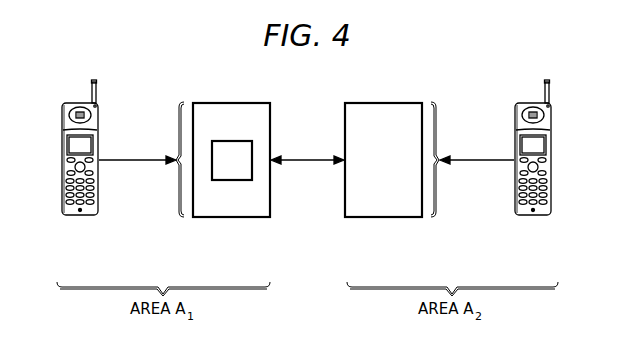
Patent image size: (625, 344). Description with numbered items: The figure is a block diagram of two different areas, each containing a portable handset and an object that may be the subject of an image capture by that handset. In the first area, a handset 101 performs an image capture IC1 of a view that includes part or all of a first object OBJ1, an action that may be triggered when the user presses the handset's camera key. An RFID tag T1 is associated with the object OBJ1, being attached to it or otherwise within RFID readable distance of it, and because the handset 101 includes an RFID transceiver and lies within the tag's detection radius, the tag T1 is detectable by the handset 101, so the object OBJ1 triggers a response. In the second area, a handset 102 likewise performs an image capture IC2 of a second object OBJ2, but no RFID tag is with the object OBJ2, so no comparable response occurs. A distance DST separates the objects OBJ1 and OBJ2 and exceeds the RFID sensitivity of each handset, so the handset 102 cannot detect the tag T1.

The handset 101 is at (80, 216).
The handset 102 is at (538, 216).
The object OBJ1 is at (231, 102).
The object OBJ2 is at (382, 102).
The RFID tag T1 is at (232, 160).
The image capture IC1 is at (137, 151).
The image capture IC2 is at (477, 151).
The distance DST is at (307, 153).